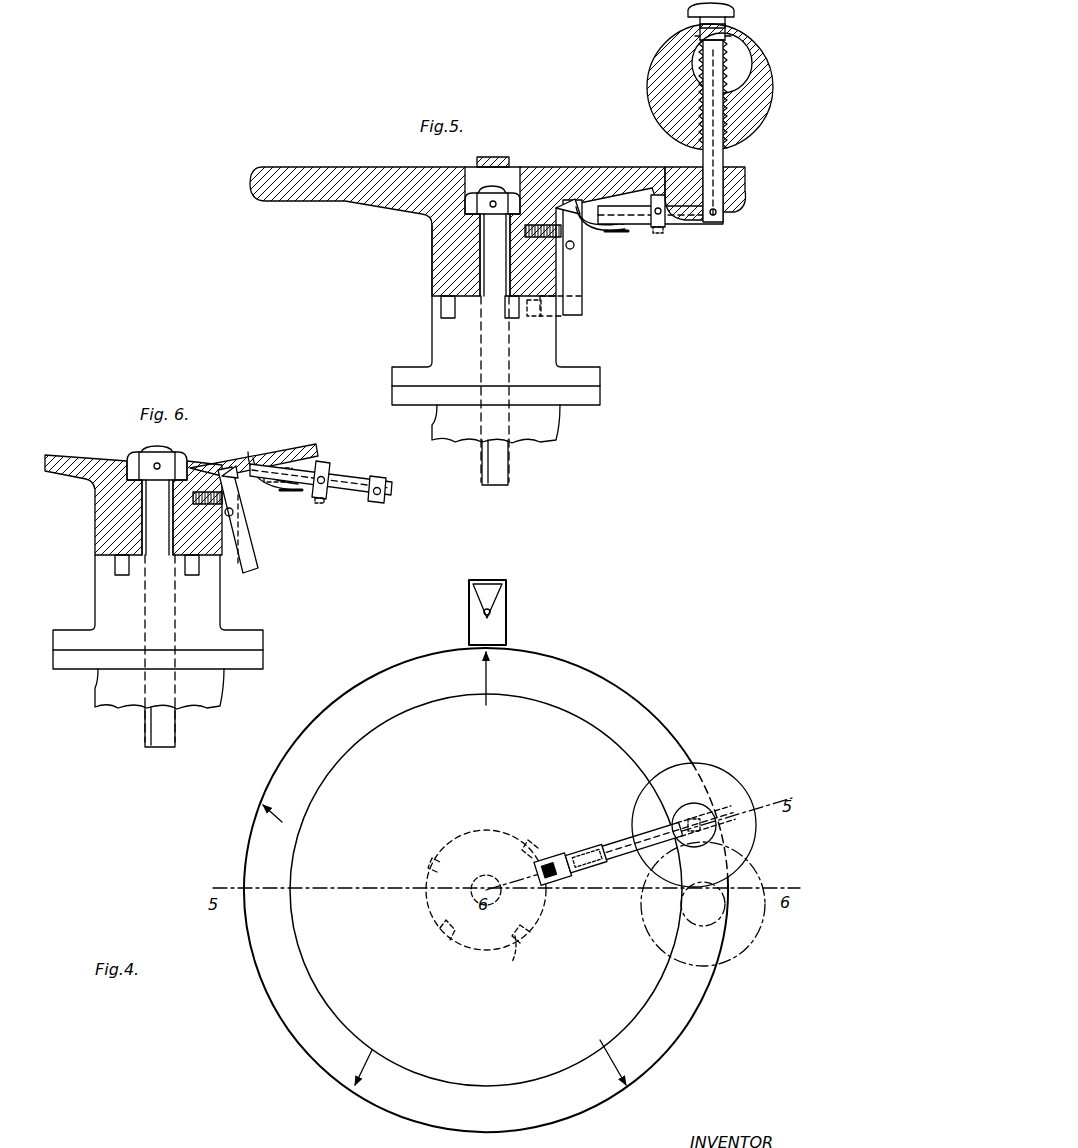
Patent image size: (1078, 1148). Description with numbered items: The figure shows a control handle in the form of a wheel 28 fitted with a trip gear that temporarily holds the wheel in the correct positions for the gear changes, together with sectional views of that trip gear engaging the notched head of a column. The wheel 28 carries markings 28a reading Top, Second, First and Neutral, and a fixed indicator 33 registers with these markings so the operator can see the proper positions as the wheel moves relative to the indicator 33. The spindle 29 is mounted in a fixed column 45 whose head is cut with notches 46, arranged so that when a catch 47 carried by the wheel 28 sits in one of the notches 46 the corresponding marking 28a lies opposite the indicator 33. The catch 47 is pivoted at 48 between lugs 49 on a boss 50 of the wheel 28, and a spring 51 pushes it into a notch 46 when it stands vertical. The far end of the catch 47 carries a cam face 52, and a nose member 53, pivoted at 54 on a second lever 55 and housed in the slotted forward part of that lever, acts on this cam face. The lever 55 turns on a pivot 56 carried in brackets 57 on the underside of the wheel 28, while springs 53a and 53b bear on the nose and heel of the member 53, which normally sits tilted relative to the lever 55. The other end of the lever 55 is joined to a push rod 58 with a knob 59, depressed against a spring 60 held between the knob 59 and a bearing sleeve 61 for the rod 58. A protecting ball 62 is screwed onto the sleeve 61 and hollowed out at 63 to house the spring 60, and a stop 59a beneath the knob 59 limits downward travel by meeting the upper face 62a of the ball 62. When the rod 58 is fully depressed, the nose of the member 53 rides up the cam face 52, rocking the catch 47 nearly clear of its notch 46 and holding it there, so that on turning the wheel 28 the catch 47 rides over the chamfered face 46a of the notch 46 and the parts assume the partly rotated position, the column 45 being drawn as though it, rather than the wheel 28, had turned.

In FIG. 5, the wheel 28 is at (262, 178).
In FIG. 4, the wheel 28 is at (245, 862).
In FIG. 4, the markings 28a is at (486, 706).
In FIG. 5, the spindle 29 is at (510, 470).
In FIG. 6, the spindle 29 is at (148, 738).
In FIG. 4, the spindle 29 is at (480, 880).
In FIG. 4, the indicator 33 is at (492, 612).
In FIG. 5, the fixed column 45 is at (440, 341).
In FIG. 6, the fixed column 45 is at (100, 609).
In FIG. 4, the fixed column 45 is at (478, 832).
In FIG. 5, the notches 46 is at (441, 304).
In FIG. 6, the notches 46 is at (192, 575).
In FIG. 4, the notches 46 is at (430, 866).
In FIG. 4, the chamfered face 46a is at (512, 963).
In FIG. 5, the catch 47 is at (583, 311).
In FIG. 6, the catch 47 is at (257, 556).
In FIG. 4, the catch 47 is at (549, 856).
In FIG. 5, the pivot 48 is at (575, 250).
In FIG. 6, the pivot 48 is at (234, 513).
In FIG. 5, the lugs 49 is at (583, 292).
In FIG. 6, the lugs 49 is at (247, 574).
In FIG. 5, the boss 50 is at (442, 268).
In FIG. 6, the boss 50 is at (97, 524).
In FIG. 5, the spring 51 is at (505, 212).
In FIG. 5, the cam face 52 is at (570, 204).
In FIG. 6, the cam face 52 is at (228, 474).
In FIG. 5, the nose member 53 is at (586, 214).
In FIG. 6, the nose member 53 is at (255, 466).
In FIG. 4, the nose member 53 is at (581, 843).
In FIG. 5, the spring 53a is at (608, 226).
In FIG. 6, the spring 53a is at (272, 486).
In FIG. 5, the spring 53b is at (620, 233).
In FIG. 6, the spring 53b is at (293, 492).
In FIG. 5, the pivot 54 is at (612, 222).
In FIG. 5, the second lever 55 is at (692, 221).
In FIG. 6, the second lever 55 is at (348, 483).
In FIG. 4, the second lever 55 is at (663, 817).
In FIG. 5, the pivot 56 is at (657, 205).
In FIG. 6, the pivot 56 is at (324, 472).
In FIG. 5, the brackets 57 is at (657, 233).
In FIG. 6, the brackets 57 is at (322, 500).
In FIG. 5, the push rod 58 is at (732, 200).
In FIG. 6, the push rod 58 is at (375, 502).
In FIG. 5, the knob 59 is at (730, 6).
In FIG. 4, the knob 59 is at (718, 806).
In FIG. 5, the stop 59a is at (697, 24).
In FIG. 5, the spring 60 is at (750, 66).
In FIG. 5, the bearing sleeve 61 is at (755, 112).
In FIG. 5, the protecting ball 62 is at (660, 95).
In FIG. 4, the protecting ball 62 is at (700, 772).
In FIG. 5, the upper face 62a is at (698, 36).
In FIG. 5, the hollow 63 is at (730, 52).